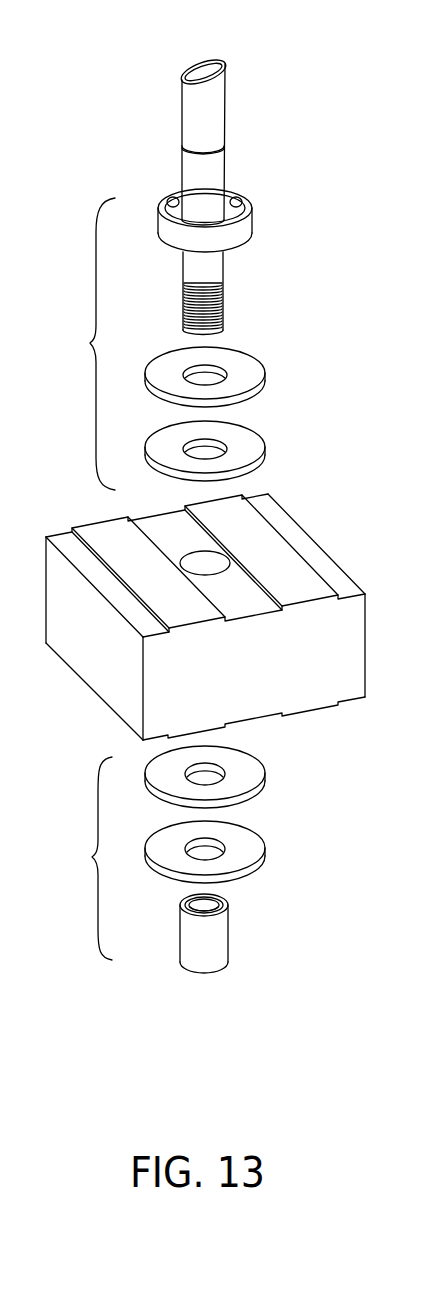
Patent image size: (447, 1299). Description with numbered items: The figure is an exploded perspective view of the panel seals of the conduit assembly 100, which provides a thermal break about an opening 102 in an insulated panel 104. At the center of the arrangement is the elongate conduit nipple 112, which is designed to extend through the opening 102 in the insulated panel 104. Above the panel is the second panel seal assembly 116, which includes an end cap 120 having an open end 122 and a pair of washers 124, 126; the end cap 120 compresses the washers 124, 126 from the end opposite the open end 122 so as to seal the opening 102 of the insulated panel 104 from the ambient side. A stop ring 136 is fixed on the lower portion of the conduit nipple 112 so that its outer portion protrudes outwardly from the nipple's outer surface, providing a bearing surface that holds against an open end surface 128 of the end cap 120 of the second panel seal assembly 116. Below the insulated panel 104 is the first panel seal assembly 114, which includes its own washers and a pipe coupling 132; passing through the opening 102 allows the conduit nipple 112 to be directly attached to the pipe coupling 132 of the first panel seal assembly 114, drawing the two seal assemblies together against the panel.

The conduit assembly 100 is at (104, 69).
The opening 102 is at (217, 563).
The insulated panel 104 is at (357, 612).
The conduit nipple 112 is at (224, 85).
The first panel seal assembly 114 is at (157, 853).
The second panel seal assembly 116 is at (81, 344).
The end cap 120 is at (245, 228).
The open end 122 is at (172, 197).
The washer 124 is at (249, 450).
The washer 126 is at (249, 372).
The open end surface 128 is at (252, 184).
The pipe coupling 132 is at (220, 923).
The stop ring 136 is at (225, 147).